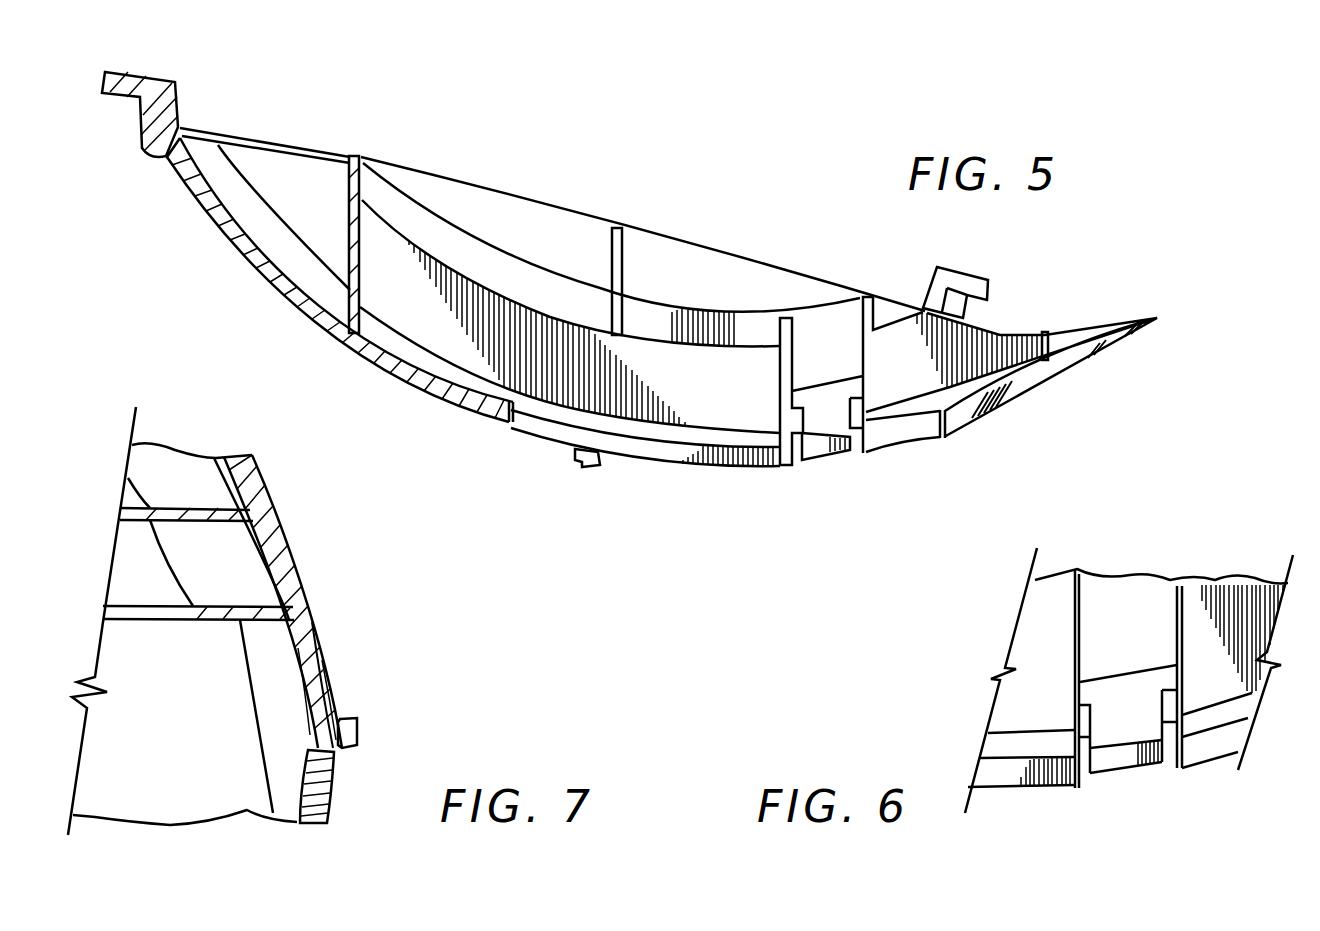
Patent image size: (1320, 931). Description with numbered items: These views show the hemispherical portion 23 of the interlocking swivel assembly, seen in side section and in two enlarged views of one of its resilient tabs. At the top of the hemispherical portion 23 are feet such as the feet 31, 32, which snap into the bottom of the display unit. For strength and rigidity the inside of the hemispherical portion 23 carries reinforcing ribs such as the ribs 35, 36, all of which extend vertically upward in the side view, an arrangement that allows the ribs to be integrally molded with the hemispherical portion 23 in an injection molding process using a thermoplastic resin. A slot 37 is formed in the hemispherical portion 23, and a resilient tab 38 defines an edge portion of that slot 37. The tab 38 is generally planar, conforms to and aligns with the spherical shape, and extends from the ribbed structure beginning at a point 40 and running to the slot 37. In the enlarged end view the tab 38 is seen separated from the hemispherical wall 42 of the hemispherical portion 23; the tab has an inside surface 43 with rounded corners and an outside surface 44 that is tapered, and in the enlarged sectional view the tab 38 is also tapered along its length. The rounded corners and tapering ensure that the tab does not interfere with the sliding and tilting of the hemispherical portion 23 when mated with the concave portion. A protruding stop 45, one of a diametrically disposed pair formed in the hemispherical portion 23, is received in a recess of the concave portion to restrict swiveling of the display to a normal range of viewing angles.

In FIG. 5, the hemispherical portion 23 is at (204, 270).
In FIG. 5, the foot 31 is at (123, 90).
In FIG. 5, the foot 32 is at (975, 283).
In FIG. 5, the reinforcing rib 35 is at (346, 227).
In FIG. 5, the reinforcing rib 36 is at (398, 263).
In FIG. 5, the slot 37 is at (662, 452).
In FIG. 7, the slot 37 is at (320, 803).
In FIG. 5, the resilient tab 38 is at (825, 452).
In FIG. 7, the resilient tab 38 is at (331, 690).
In FIG. 6, the resilient tab 38 is at (1110, 765).
In FIG. 7, the point 40 is at (326, 557).
In FIG. 7, the hemispherical wall 42 is at (255, 486).
In FIG. 6, the hemispherical wall 42 is at (1005, 778).
In FIG. 7, the inside surface 43 is at (308, 698).
In FIG. 6, the inside surface 43 is at (1122, 732).
In FIG. 7, the outside surface 44 is at (314, 645).
In FIG. 6, the outside surface 44 is at (1143, 772).
In FIG. 5, the protruding stop 45 is at (587, 462).
In FIG. 7, the protruding stop 45 is at (359, 730).